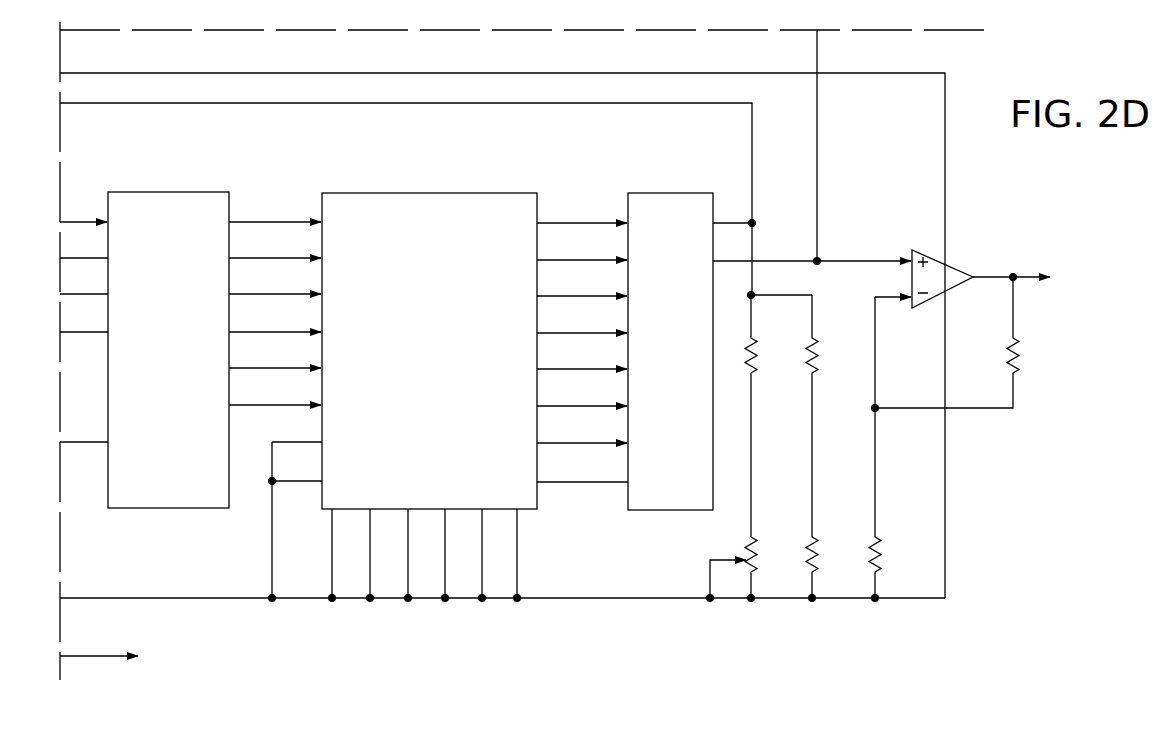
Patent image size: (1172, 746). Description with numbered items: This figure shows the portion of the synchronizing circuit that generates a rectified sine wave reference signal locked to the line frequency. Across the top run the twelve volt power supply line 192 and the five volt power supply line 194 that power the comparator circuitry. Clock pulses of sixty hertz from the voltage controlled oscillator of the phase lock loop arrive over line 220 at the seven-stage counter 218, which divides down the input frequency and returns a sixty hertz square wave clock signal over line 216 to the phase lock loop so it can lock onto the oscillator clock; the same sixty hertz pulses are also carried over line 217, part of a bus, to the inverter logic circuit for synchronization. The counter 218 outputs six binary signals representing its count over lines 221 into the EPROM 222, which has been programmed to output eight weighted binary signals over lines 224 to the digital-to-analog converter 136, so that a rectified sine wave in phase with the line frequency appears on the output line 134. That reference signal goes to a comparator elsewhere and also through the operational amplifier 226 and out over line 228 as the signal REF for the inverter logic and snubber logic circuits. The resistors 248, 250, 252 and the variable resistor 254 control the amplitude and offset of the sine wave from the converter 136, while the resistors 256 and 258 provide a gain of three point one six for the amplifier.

The output line 134 is at (817, 168).
The digital-to-analog converter 136 is at (685, 196).
The 12 volt power supply line 192 is at (490, 73).
The 5 volt power supply line 194 is at (497, 104).
The counter output line 216 is at (78, 297).
The clock line 217 is at (75, 655).
The seven-stage counter 218 is at (217, 198).
The clock input line 220 is at (80, 220).
The counter output lines 221 is at (298, 222).
The EPROM 222 is at (414, 195).
The EPROM output lines 224 is at (588, 222).
The operational amplifier 226 is at (948, 270).
The REF output line 228 is at (990, 275).
The resistor 248 is at (758, 348).
The resistor 250 is at (820, 348).
The resistor 252 is at (815, 545).
The variable resistor 254 is at (756, 545).
The resistor 256 is at (878, 545).
The resistor 258 is at (1005, 350).